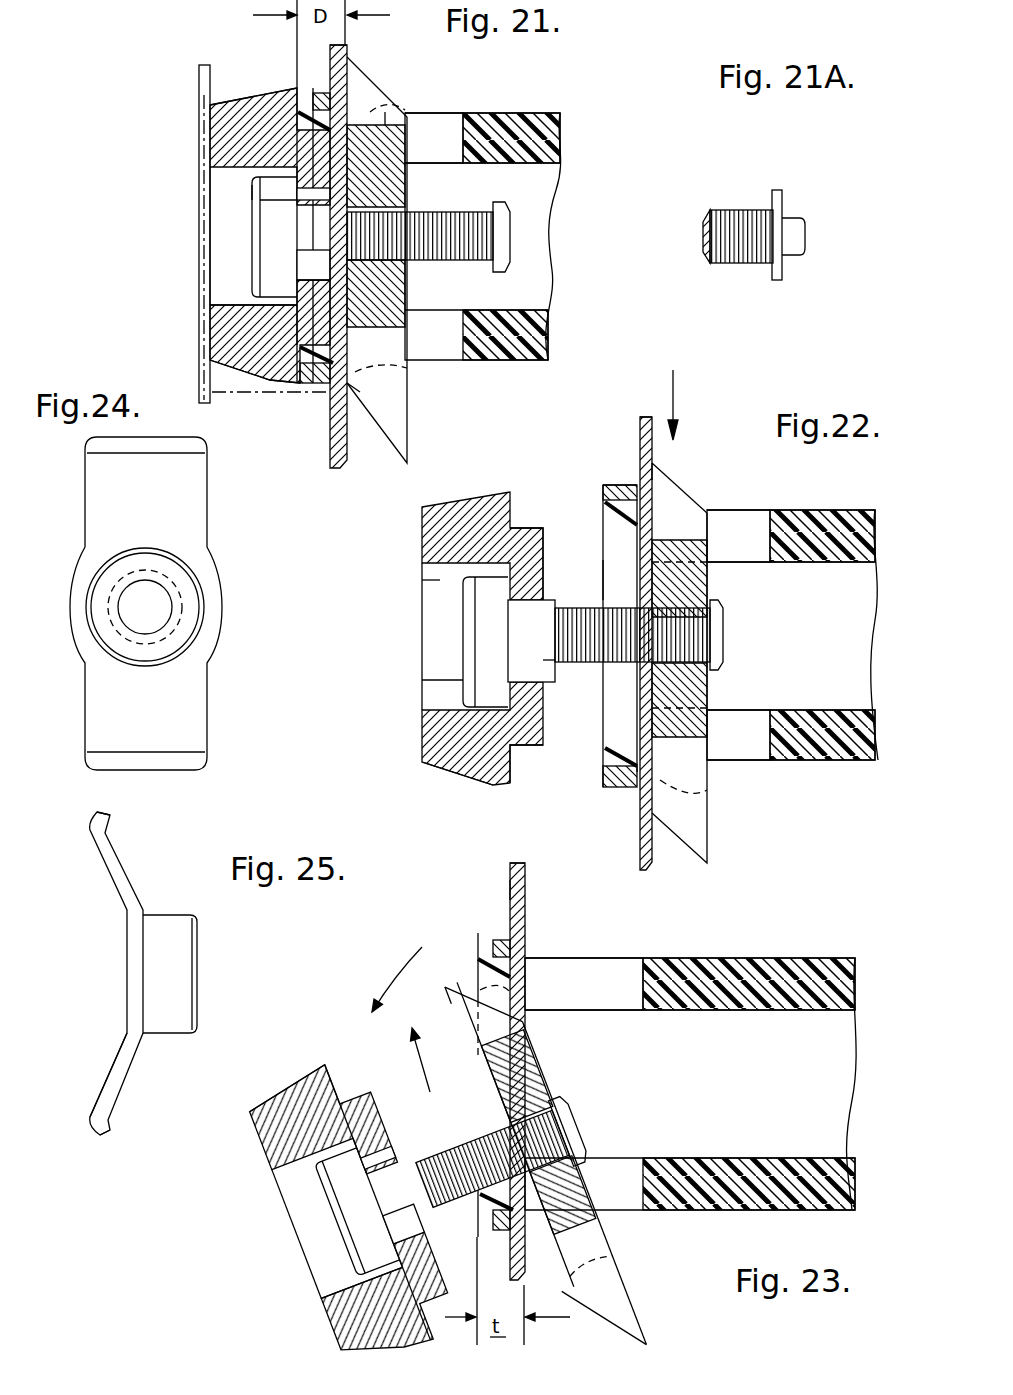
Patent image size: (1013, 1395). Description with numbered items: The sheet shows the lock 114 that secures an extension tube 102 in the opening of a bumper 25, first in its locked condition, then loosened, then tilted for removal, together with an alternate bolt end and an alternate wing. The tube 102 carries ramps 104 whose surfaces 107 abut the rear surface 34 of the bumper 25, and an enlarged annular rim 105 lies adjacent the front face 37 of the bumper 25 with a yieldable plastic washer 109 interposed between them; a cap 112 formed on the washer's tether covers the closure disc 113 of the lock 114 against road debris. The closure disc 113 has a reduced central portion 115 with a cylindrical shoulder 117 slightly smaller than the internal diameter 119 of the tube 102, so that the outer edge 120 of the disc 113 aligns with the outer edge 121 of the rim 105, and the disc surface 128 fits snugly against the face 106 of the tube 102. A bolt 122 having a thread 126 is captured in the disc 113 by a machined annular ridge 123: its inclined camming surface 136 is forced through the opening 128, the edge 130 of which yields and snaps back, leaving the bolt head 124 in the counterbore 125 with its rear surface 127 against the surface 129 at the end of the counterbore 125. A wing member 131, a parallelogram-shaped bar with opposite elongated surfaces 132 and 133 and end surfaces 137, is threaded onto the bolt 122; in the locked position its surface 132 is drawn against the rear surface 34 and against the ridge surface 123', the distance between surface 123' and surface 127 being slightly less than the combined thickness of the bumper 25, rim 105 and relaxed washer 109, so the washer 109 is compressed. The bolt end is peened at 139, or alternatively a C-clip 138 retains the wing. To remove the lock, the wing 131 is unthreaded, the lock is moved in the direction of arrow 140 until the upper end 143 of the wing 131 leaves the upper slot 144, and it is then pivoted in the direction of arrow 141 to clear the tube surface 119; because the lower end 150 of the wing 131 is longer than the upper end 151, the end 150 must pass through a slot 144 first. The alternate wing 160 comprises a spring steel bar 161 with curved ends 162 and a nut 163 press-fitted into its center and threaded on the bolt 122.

In FIG. 21, the bumper 25 is at (347, 50).
In FIG. 22, the bumper 25 is at (640, 418).
In FIG. 23, the bumper 25 is at (512, 865).
In FIG. 21, the rear surface of bumper 34 is at (345, 455).
In FIG. 23, the rear surface of bumper 34 is at (527, 885).
In FIG. 22, the front face of bumper 37 is at (640, 470).
In FIG. 23, the front face of bumper 37 is at (512, 892).
In FIG. 21, the tube 102 is at (548, 110).
In FIG. 22, the tube 102 is at (840, 510).
In FIG. 23, the tube 102 is at (790, 958).
In FIG. 21, the ramps 104 is at (378, 90).
In FIG. 22, the ramps 104 is at (680, 500).
In FIG. 23, the ramps 104 is at (527, 952).
In FIG. 21, the annular rim 105 is at (315, 375).
In FIG. 22, the annular rim 105 is at (605, 785).
In FIG. 23, the annular rim 105 is at (480, 950).
In FIG. 22, the face of tube 106 is at (605, 760).
In FIG. 23, the surfaces of ramps 107 is at (520, 942).
In FIG. 21, the plastic washer 109 is at (318, 93).
In FIG. 22, the plastic washer 109 is at (625, 492).
In FIG. 23, the plastic washer 109 is at (500, 935).
In FIG. 21, the cap 112 is at (198, 82).
In FIG. 21, the closure disc 113 is at (228, 100).
In FIG. 22, the closure disc 113 is at (470, 505).
In FIG. 23, the closure disc 113 is at (333, 1312).
In FIG. 21, the lock 114 is at (225, 95).
In FIG. 22, the lock 114 is at (435, 770).
In FIG. 21, the reduced central portion 115 is at (310, 330).
In FIG. 22, the reduced central portion 115 is at (563, 497).
In FIG. 23, the reduced central portion 115 is at (345, 1085).
In FIG. 21, the cylindrical shoulder 117 is at (270, 381).
In FIG. 22, the cylindrical shoulder 117 is at (540, 760).
In FIG. 21, the internal diameter of tube 119 is at (385, 112).
In FIG. 23, the internal diameter of tube 119 is at (527, 992).
In FIG. 21, the outer edge of closure disc 120 is at (298, 90).
In FIG. 22, the outer edge of closure disc 120 is at (505, 492).
In FIG. 22, the outer edge of annular rim 121 is at (615, 500).
In FIG. 21, the bolt 122 is at (500, 203).
In FIG. 21A, the bolt 122 is at (758, 205).
In FIG. 22, the bolt 122 is at (620, 663).
In FIG. 23, the bolt 122 is at (548, 1078).
In FIG. 21, the machined annular ridge 123 is at (409, 293).
In FIG. 22, the surface of ridge 123' is at (567, 564).
In FIG. 21, the bolt head 124 is at (268, 224).
In FIG. 21, the counterbore 125 is at (250, 185).
In FIG. 22, the counterbore 125 is at (435, 580).
In FIG. 23, the counterbore 125 is at (332, 1280).
In FIG. 21, the thread 126 is at (546, 278).
In FIG. 21, the rear surface of bolt head 127 is at (300, 157).
In FIG. 22, the rear surface of bolt head 127 is at (500, 633).
In FIG. 23, the rear surface of bolt head 127 is at (325, 1200).
In FIG. 21, the opening of closure disc 128 is at (262, 200).
In FIG. 22, the opening of closure disc 128 is at (475, 607).
In FIG. 21, the surface at end of counterbore 129 is at (300, 300).
In FIG. 21, the edge of opening 130 is at (305, 280).
In FIG. 22, the edge of opening 130 is at (455, 680).
In FIG. 21, the wing member 131 is at (398, 432).
In FIG. 22, the wing member 131 is at (706, 858).
In FIG. 21, the surface of wing 132 is at (355, 388).
In FIG. 22, the surface of wing 132 is at (603, 580).
In FIG. 23, the surface of wing 132 is at (448, 1007).
In FIG. 22, the opposite surface of wing 133 is at (712, 690).
In FIG. 23, the opposite surface of wing 133 is at (638, 1296).
In FIG. 21, the inclined camming surface 136 is at (405, 186).
In FIG. 22, the inclined camming surface 136 is at (545, 662).
In FIG. 22, the end surfaces of wing 137 is at (690, 470).
In FIG. 21A, the C-clip 138 is at (782, 195).
In FIG. 21, the peened end of bolt 139 is at (510, 235).
In FIG. 22, the peened end of bolt 139 is at (725, 640).
In FIG. 23, the peened end of bolt 139 is at (583, 1122).
In FIG. 22, the arrow 140 is at (676, 380).
In FIG. 23, the arrow 141 is at (400, 965).
In FIG. 22, the upper end of wing 143 is at (672, 462).
In FIG. 23, the upper end of wing 143 is at (470, 985).
In FIG. 22, the slot of tube 144 is at (748, 525).
In FIG. 23, the slot of tube 144 is at (430, 1085).
In FIG. 23, the lower end of wing 150 is at (622, 1262).
In FIG. 21, the upper end of wing 151 is at (407, 135).
In FIG. 23, the upper end of wing 151 is at (540, 1062).
In FIG. 24, the alternate wing 160 is at (207, 520).
In FIG. 25, the alternate wing 160 is at (137, 900).
In FIG. 24, the spring steel bar 161 is at (195, 695).
In FIG. 25, the spring steel bar 161 is at (115, 1080).
In FIG. 25, the curved ends 162 is at (97, 822).
In FIG. 24, the nut 163 is at (200, 600).
In FIG. 25, the nut 163 is at (185, 950).